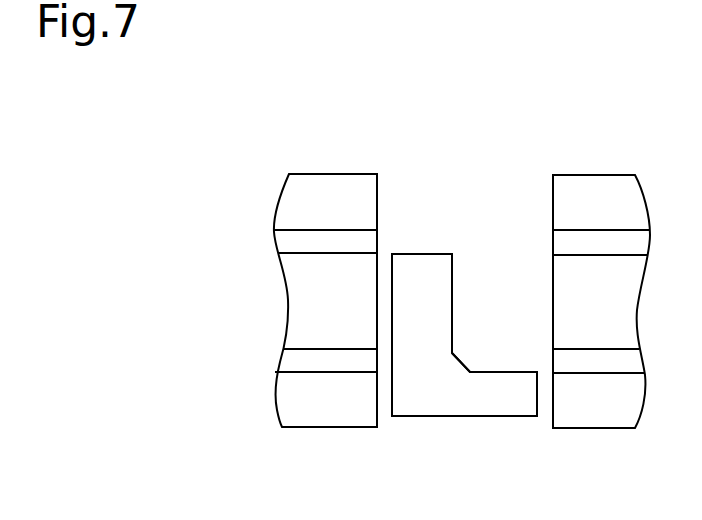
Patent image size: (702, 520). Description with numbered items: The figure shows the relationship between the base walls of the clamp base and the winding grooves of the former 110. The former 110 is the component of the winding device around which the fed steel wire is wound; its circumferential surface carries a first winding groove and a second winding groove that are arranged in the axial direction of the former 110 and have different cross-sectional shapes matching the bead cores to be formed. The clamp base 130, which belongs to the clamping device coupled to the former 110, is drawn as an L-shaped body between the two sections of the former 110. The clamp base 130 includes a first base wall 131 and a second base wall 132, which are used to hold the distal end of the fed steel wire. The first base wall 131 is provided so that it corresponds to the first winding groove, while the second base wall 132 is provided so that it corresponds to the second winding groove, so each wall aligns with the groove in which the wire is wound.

The former 110 is at (592, 175).
The clamp base 130 is at (441, 416).
The first base wall 131 is at (411, 254).
The second base wall 132 is at (494, 372).